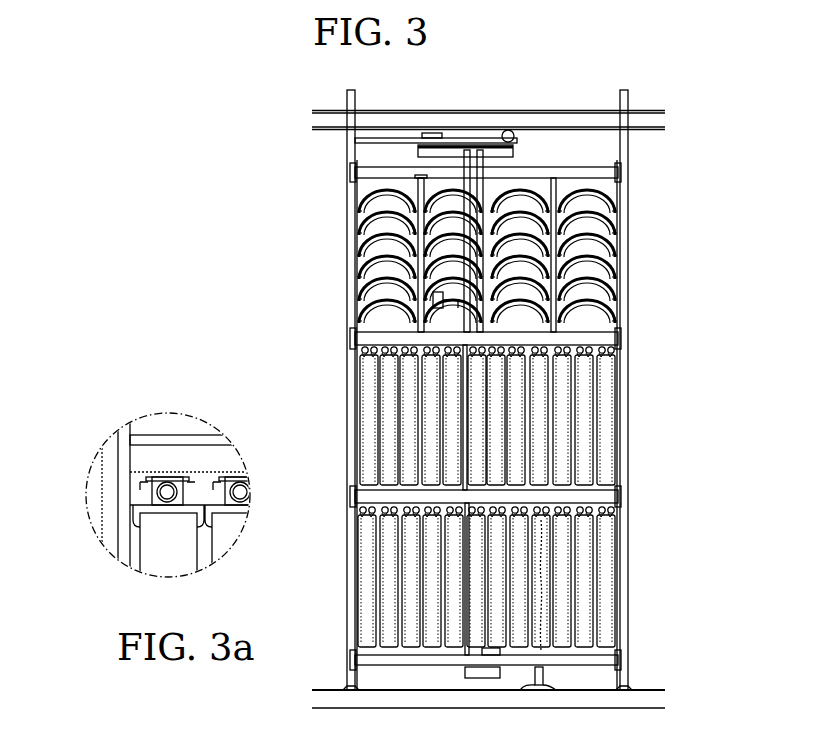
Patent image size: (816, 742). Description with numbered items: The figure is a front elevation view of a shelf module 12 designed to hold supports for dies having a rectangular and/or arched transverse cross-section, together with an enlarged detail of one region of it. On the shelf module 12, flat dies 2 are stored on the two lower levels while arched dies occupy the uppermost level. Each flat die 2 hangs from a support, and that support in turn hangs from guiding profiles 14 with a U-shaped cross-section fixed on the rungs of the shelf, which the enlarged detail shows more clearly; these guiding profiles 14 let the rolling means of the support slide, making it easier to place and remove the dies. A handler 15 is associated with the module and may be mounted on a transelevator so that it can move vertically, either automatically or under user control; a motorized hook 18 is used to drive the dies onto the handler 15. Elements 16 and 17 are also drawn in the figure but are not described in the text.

In FIG. 3, the flat die 2 is at (599, 602).
In FIG. 3A, the flat die 2 is at (140, 552).
In FIG. 3, the shelf module 12 is at (646, 389).
In FIG. 3A, the guiding profile with U-shaped cross-section 14 is at (143, 489).
In FIG. 3, the handler 15 is at (395, 361).
In FIG. 3, the tube row 16 is at (478, 444).
In FIG. 3, the cable 17 is at (493, 642).
In FIG. 3, the hook 18 is at (647, 134).